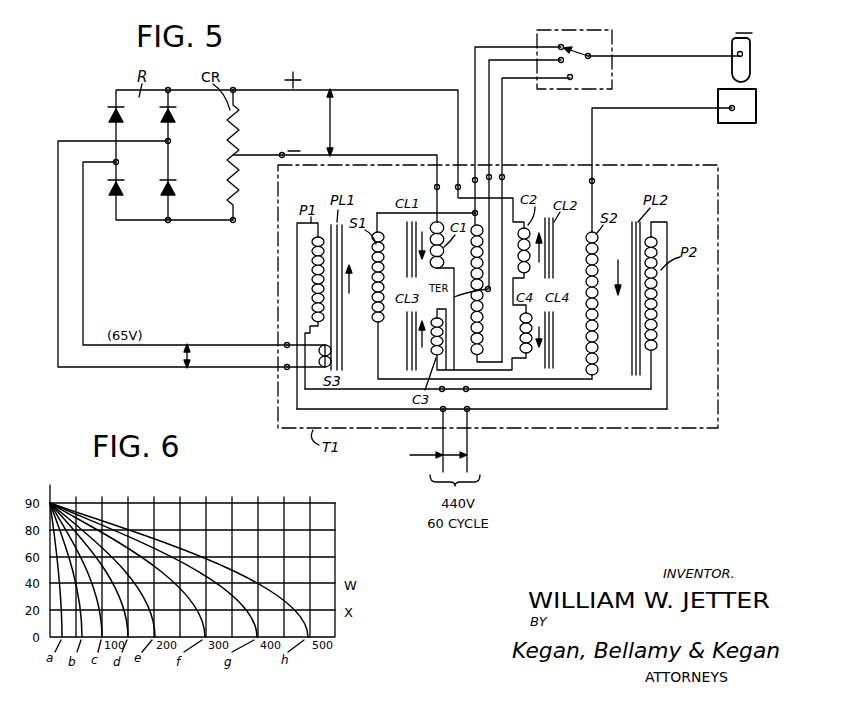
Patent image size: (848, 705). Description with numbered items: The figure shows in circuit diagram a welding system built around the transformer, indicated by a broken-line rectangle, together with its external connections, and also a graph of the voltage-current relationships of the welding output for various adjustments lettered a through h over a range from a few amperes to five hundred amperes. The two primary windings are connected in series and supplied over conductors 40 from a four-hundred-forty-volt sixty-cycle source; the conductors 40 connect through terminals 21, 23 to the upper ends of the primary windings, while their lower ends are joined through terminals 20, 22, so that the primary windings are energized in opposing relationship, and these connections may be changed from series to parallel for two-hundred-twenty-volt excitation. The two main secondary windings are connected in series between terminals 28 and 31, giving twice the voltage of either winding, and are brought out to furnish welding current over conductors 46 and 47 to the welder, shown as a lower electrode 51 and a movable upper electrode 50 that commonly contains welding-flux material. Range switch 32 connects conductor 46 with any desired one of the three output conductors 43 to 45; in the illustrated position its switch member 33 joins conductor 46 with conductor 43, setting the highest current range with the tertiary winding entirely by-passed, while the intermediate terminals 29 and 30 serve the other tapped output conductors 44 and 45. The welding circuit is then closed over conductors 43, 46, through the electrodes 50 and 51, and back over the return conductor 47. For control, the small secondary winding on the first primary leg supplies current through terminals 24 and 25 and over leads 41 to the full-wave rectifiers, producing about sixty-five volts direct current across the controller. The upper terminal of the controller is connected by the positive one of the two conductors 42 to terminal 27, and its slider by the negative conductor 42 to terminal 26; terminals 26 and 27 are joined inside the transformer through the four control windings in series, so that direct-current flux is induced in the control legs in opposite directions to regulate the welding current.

The transformer terminal 20 is at (443, 391).
The transformer terminal 21 is at (442, 411).
The transformer terminal 22 is at (467, 391).
The transformer terminal 23 is at (469, 411).
The transformer terminal 24 is at (284, 343).
The transformer terminal 25 is at (283, 369).
The transformer terminal 26 is at (434, 188).
The transformer terminal 27 is at (456, 185).
The transformer terminal 28 is at (473, 178).
The transformer terminal 29 is at (491, 175).
The transformer terminal 30 is at (504, 176).
The transformer terminal 31 is at (605, 182).
The range switch 32 is at (580, 31).
The switch member 33 is at (584, 54).
The conductors 40 is at (425, 456).
The leads 41 is at (187, 371).
The conductors 42 is at (331, 92).
The output conductor 43 is at (523, 46).
The output conductor 44 is at (497, 61).
The output conductor 45 is at (513, 79).
The conductor 46 is at (694, 55).
The return conductor 47 is at (692, 93).
The upper electrode 50 is at (752, 68).
The lower electrode 51 is at (744, 125).